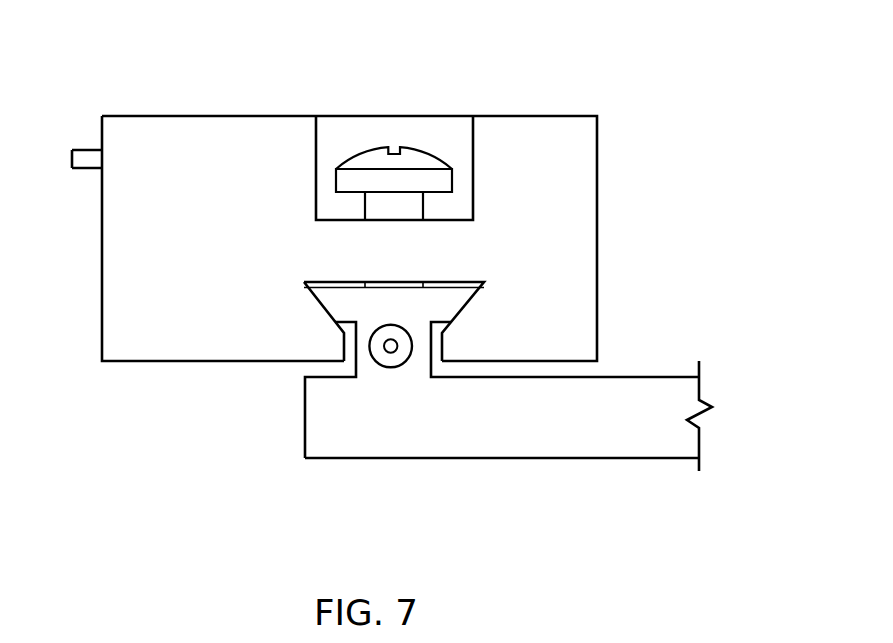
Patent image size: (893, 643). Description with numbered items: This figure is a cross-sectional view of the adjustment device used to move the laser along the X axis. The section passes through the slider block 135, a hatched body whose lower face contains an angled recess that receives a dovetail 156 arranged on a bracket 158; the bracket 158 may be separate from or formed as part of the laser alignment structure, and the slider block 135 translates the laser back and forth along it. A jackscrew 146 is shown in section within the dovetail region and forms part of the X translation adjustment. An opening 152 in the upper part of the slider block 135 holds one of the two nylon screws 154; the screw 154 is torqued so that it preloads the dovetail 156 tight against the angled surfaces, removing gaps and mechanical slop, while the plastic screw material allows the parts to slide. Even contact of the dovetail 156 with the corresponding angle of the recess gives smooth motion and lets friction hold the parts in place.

The slider block 135 is at (212, 145).
The opening 152 is at (452, 143).
The nylon screw 154 is at (366, 153).
The dovetail 156 is at (424, 308).
The jackscrew 146 is at (390, 367).
The bracket 158 is at (675, 397).